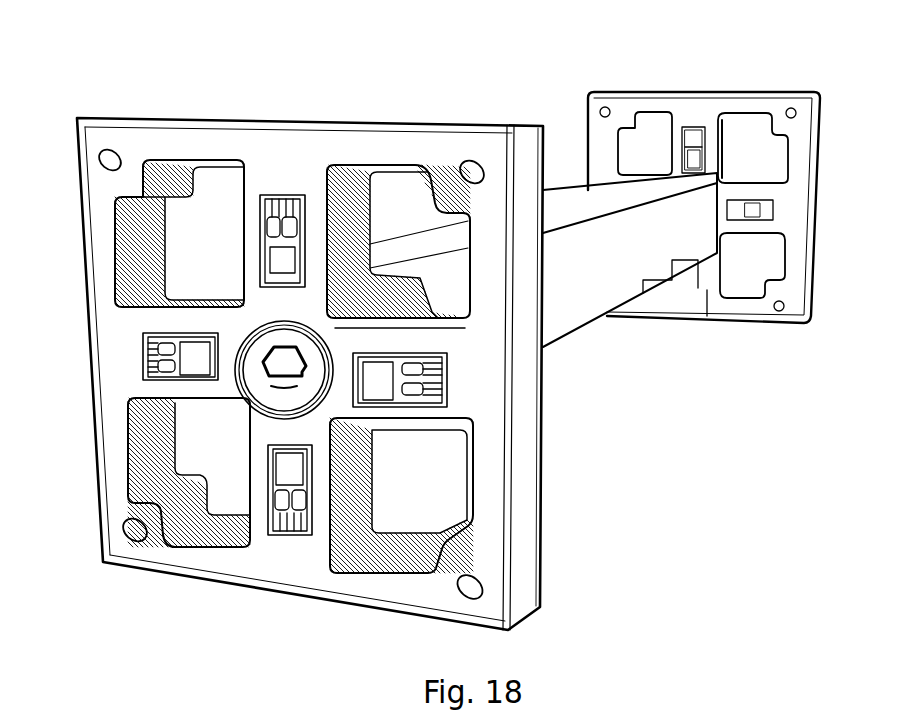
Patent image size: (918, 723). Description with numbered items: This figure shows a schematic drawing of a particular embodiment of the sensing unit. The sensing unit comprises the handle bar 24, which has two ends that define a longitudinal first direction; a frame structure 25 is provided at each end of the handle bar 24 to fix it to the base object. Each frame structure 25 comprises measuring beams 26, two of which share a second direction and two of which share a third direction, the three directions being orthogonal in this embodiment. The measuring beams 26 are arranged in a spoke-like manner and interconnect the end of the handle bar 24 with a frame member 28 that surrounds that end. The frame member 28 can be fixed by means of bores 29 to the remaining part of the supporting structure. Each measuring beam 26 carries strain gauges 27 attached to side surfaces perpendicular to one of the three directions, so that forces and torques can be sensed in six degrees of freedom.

The handle bar 24 is at (578, 314).
The frame structure 25 is at (325, 91).
The measuring beam 26 is at (157, 390).
The strain gauge 27 is at (302, 537).
The frame member 28 is at (527, 490).
The bore 29 is at (468, 158).